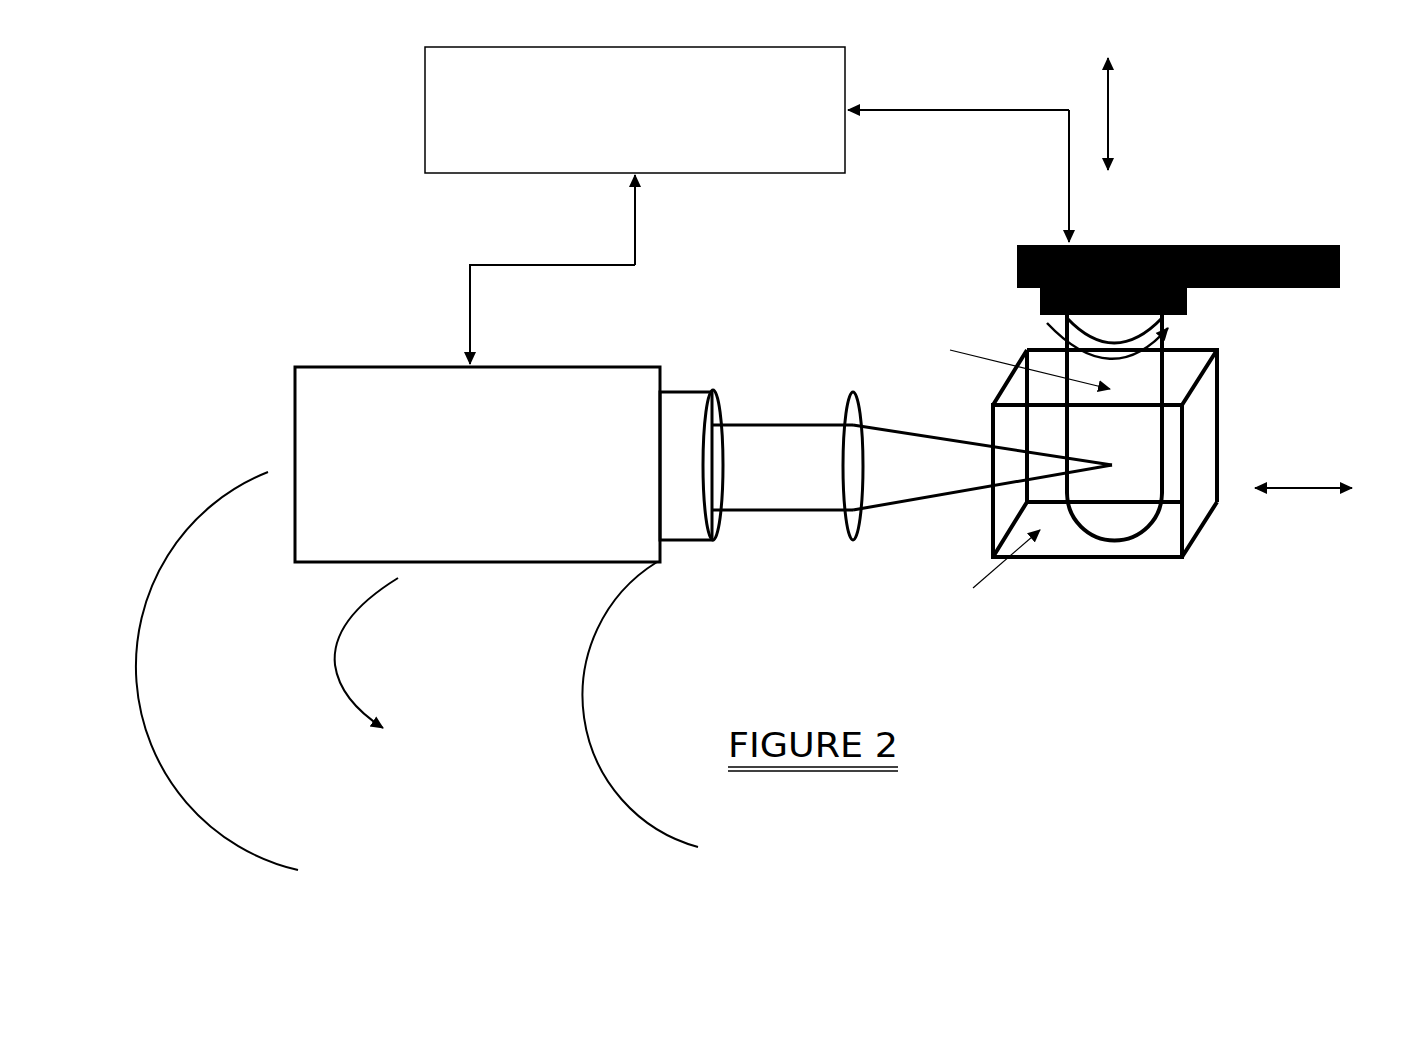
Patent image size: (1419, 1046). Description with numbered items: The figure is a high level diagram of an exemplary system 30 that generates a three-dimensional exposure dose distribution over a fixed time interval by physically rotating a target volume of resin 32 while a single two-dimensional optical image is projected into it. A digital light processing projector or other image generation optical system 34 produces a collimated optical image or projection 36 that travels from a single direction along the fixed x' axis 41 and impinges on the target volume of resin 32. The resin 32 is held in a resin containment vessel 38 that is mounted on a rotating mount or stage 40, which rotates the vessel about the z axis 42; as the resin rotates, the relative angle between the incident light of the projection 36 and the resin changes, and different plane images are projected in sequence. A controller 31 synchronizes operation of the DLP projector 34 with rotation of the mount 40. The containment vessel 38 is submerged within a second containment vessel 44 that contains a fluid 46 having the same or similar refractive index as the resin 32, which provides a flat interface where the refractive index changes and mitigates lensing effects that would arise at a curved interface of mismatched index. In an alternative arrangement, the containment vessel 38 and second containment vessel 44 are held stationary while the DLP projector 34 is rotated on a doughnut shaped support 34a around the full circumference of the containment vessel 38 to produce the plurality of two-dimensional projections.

The system 30 is at (300, 280).
The controller 31 is at (747, 205).
The target volume of resin 32 is at (1085, 428).
The DLP projector 34 is at (320, 428).
The doughnut shaped support 34a is at (213, 623).
The projection 36 is at (753, 425).
The resin containment vessel 38 is at (1183, 337).
The rotating mount 40 is at (1017, 252).
The x' axis 41 is at (1302, 490).
The z axis 42 is at (1108, 128).
The second containment vessel 44 is at (1213, 458).
The fluid 46 is at (1160, 535).